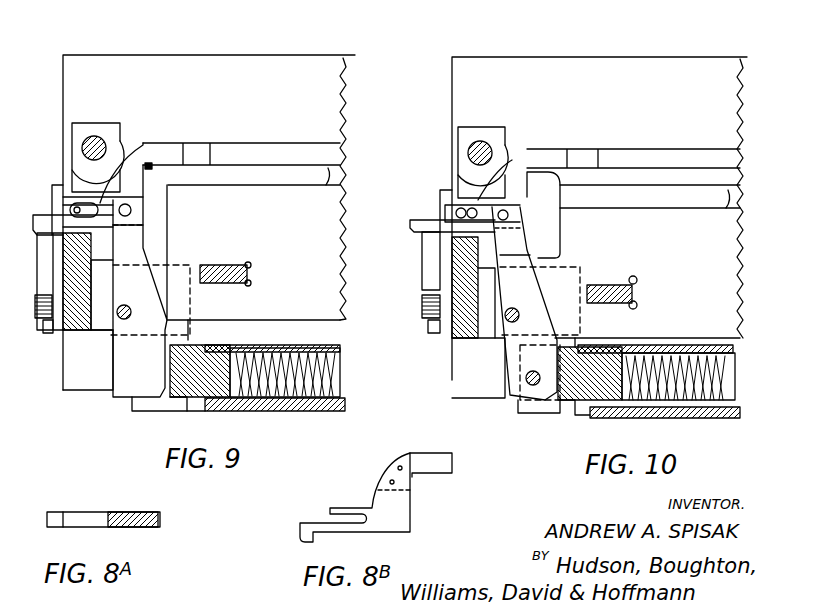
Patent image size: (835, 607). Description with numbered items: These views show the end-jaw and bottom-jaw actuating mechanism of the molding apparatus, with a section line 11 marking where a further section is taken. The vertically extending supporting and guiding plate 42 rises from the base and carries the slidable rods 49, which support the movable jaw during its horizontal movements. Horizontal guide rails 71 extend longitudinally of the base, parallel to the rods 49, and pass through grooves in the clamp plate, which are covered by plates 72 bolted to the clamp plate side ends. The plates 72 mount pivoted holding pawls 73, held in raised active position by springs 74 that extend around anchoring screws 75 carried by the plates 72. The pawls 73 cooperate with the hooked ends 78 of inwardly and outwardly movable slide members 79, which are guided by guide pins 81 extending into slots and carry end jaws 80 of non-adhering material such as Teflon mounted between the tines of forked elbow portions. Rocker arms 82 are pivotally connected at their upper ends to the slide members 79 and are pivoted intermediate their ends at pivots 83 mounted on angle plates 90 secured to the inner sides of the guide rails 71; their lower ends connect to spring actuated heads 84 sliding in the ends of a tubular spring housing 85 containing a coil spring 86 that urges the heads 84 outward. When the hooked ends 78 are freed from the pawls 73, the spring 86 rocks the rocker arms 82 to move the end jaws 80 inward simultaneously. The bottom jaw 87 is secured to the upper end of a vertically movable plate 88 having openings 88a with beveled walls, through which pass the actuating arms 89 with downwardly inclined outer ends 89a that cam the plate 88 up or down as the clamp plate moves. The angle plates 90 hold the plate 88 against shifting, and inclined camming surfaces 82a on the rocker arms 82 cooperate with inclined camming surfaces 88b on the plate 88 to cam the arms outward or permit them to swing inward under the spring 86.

In FIG. 9, the section line 11- 11 is at (197, 27).
In FIG. 9, the vertically extending supporting and guiding plate 42 is at (327, 63).
In FIG. 10, the vertically extending supporting and guiding plate 42 is at (722, 90).
In FIG. 9, the slidable rods 49 is at (104, 150).
In FIG. 10, the slidable rods 49 is at (490, 155).
In FIG. 9, the horizontal guide rails 71 is at (80, 343).
In FIG. 10, the horizontal guide rails 71 is at (465, 345).
In FIG. 9, the plates 72 is at (44, 335).
In FIG. 10, the plates 72 is at (442, 190).
In FIG. 9, the pivoted holding pawls 73 is at (46, 265).
In FIG. 10, the pivoted holding pawls 73 is at (420, 262).
In FIG. 10, the springs 74 is at (422, 300).
In FIG. 10, the anchoring screws 75 is at (428, 328).
In FIG. 9, the hooked ends 78 is at (37, 215).
In FIG. 9, the slide members 79 is at (105, 200).
In FIG. 8A, the slide members 79 is at (98, 498).
In FIG. 8B, the slide members 79 is at (370, 505).
In FIG. 10, the slide members 79 is at (480, 205).
In FIG. 8B, the end jaws 80 is at (425, 463).
In FIG. 9, the guide pins 81 is at (55, 195).
In FIG. 9, the rocker arms 82 is at (118, 281).
In FIG. 10, the rocker arms 82 is at (520, 284).
In FIG. 9, the inclined camming surfaces 82a is at (149, 268).
In FIG. 10, the inclined camming surfaces 82a is at (537, 250).
In FIG. 9, the pivots 83 is at (132, 293).
In FIG. 10, the pivots 83 is at (517, 322).
In FIG. 9, the spring actuated heads 84 is at (175, 412).
In FIG. 10, the spring actuated heads 84 is at (572, 414).
In FIG. 9, the tubular spring housing 85 is at (292, 412).
In FIG. 10, the tubular spring housing 85 is at (688, 418).
In FIG. 9, the coil spring 86 is at (342, 380).
In FIG. 10, the coil spring 86 is at (737, 382).
In FIG. 9, the bottom jaw 87 is at (328, 168).
In FIG. 10, the bottom jaw 87 is at (728, 190).
In FIG. 9, the vertically movable plate 88 is at (322, 232).
In FIG. 10, the vertically movable plate 88 is at (719, 240).
In FIG. 9, the openings 88a is at (250, 284).
In FIG. 9, the inclined camming surfaces 88b is at (166, 306).
In FIG. 10, the inclined camming surfaces 88b is at (540, 300).
In FIG. 9, the actuating arms 89 is at (246, 266).
In FIG. 10, the downwardly inclined outer ends 89a is at (612, 303).
In FIG. 9, the angle plates 90 is at (180, 330).
In FIG. 10, the angle plates 90 is at (500, 345).